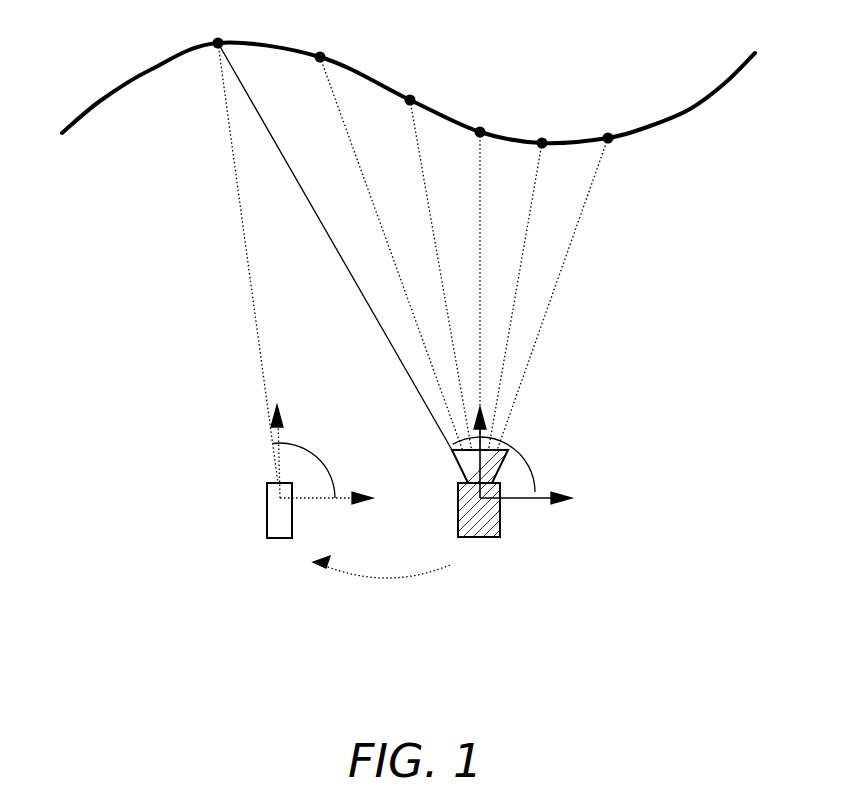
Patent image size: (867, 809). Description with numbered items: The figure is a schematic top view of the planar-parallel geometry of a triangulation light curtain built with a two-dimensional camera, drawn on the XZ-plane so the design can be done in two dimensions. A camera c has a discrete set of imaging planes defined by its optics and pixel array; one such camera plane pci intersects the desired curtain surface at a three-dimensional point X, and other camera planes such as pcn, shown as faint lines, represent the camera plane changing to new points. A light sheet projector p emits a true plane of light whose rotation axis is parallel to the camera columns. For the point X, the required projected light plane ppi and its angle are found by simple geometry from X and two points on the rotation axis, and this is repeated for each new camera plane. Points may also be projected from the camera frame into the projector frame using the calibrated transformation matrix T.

The 3D point on curtain surface X is at (408, 77).
The projected light plane ppi is at (234, 263).
The camera plane pci is at (335, 246).
The camera plane pcn is at (472, 253).
The light sheet projector p is at (322, 458).
The camera c is at (500, 457).
The transformation matrix T is at (381, 594).